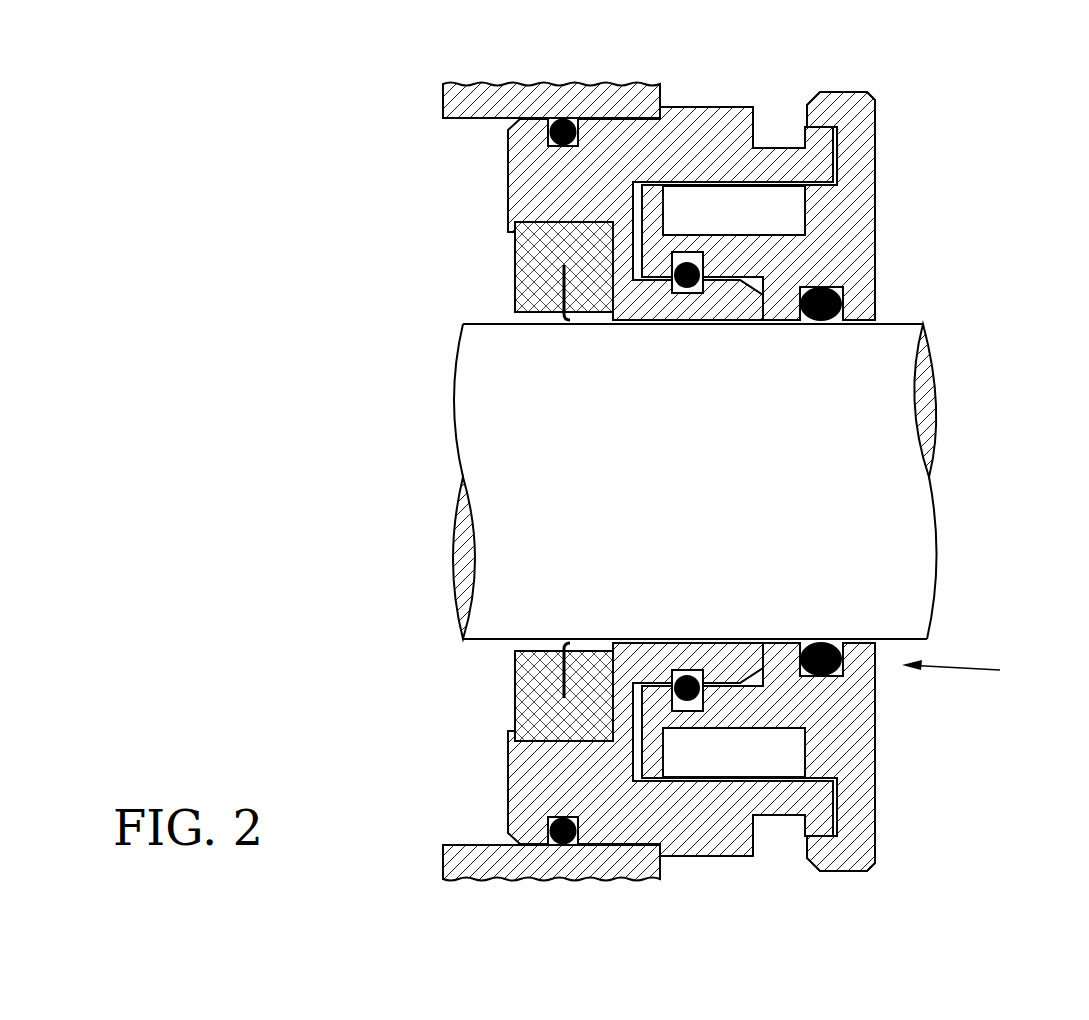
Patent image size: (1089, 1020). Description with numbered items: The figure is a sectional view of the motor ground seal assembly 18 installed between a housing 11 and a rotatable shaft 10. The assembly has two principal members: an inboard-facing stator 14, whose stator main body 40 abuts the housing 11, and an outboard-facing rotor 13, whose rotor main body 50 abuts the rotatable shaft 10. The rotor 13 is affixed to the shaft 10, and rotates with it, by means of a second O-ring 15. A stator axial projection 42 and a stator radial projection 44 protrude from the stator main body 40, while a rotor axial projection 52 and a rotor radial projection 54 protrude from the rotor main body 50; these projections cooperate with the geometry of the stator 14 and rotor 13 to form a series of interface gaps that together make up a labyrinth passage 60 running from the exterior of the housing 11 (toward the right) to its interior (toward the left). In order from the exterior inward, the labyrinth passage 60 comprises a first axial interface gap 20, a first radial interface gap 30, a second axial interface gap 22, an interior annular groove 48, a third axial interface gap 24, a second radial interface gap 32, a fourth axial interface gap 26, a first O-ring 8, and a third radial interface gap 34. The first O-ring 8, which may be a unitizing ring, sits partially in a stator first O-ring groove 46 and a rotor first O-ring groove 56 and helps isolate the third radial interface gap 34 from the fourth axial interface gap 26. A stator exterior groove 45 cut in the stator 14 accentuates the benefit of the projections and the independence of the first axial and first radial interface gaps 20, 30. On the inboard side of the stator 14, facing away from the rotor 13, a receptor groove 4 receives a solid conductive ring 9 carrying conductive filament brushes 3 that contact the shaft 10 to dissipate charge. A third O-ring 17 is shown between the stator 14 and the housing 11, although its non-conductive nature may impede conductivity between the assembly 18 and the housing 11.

The conductive filament brushes 3 is at (560, 320).
The receptor groove 4 is at (530, 221).
The first O-ring 8 is at (703, 292).
The solid conductive ring 9 is at (515, 260).
The rotatable shaft 10 is at (933, 502).
The housing 11 is at (443, 98).
The rotor 13 is at (850, 243).
The stator 14 is at (688, 117).
The second O-ring 15 is at (843, 298).
The third O-ring 17 is at (562, 118).
The motor ground seal assembly 18 is at (968, 672).
The first axial interface gap 20 is at (805, 127).
The second axial interface gap 22 is at (838, 183).
The third axial interface gap 24 is at (650, 185).
The fourth axial interface gap 26 is at (633, 277).
The first radial interface gap 30 is at (835, 148).
The second radial interface gap 32 is at (638, 230).
The third radial interface gap 34 is at (764, 305).
The stator main body 40 is at (637, 161).
The stator axial projection 42 is at (777, 167).
The stator radial projection 44 is at (837, 132).
The stator exterior groove 45 is at (775, 145).
The stator first O-ring groove 46 is at (676, 294).
The interior annular groove 48 is at (760, 217).
The rotor main body 50 is at (832, 271).
The rotor axial projection 52 is at (830, 110).
The rotor radial projection 54 is at (857, 133).
The rotor first O-ring groove 56 is at (687, 250).
The labyrinth passage 60 is at (723, 280).